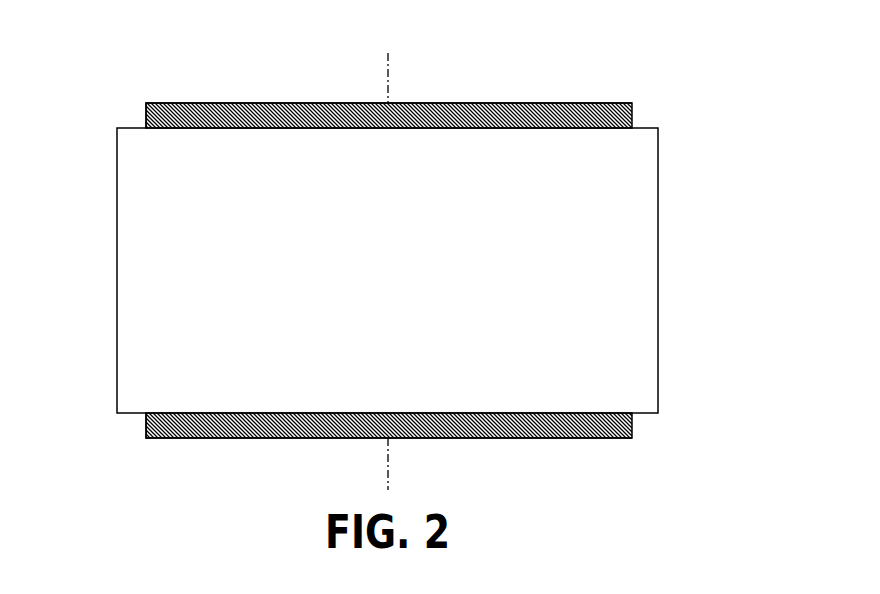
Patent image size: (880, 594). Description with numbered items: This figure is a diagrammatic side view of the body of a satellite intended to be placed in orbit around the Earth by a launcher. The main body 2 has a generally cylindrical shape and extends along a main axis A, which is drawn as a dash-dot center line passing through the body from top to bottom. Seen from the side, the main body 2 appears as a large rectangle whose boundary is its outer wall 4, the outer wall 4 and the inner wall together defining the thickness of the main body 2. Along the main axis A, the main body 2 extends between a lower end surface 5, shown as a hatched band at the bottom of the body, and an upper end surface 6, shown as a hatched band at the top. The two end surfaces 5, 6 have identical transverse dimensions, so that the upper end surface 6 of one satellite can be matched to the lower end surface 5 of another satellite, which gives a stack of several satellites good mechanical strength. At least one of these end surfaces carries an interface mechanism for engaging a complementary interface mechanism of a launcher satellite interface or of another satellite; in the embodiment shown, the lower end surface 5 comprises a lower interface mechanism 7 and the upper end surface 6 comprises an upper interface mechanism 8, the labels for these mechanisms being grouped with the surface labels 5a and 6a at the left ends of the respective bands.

The main body 2 is at (396, 302).
The outer wall 4 is at (632, 193).
The lower end surface 5 is at (207, 438).
The surface of lower layer 5a is at (150, 427).
The upper end surface 6 is at (632, 115).
The surface of upper layer 6a is at (148, 118).
The lower interface mechanism 7 is at (347, 446).
The upper interface mechanism 8 is at (337, 98).
The main axis A is at (393, 70).